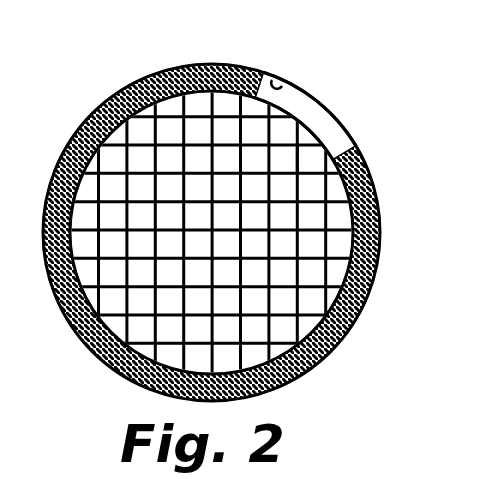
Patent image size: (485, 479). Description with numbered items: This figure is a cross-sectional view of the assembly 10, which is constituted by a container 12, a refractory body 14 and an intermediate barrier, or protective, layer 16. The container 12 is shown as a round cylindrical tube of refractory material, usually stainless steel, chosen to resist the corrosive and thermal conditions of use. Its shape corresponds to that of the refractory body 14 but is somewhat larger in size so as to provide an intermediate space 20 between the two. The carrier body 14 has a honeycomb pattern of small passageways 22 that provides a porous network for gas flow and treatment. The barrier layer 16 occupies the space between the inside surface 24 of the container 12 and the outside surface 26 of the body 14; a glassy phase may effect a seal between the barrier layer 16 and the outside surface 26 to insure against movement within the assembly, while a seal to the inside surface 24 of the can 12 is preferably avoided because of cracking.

The assembly 10 is at (312, 59).
The container 12 is at (370, 259).
The refractory body 14 is at (308, 195).
The barrier layer 16 is at (368, 215).
The intermediate space 20 is at (305, 98).
The passageways 22 is at (307, 160).
The inside surface 24 is at (278, 84).
The outside surface 26 is at (312, 125).